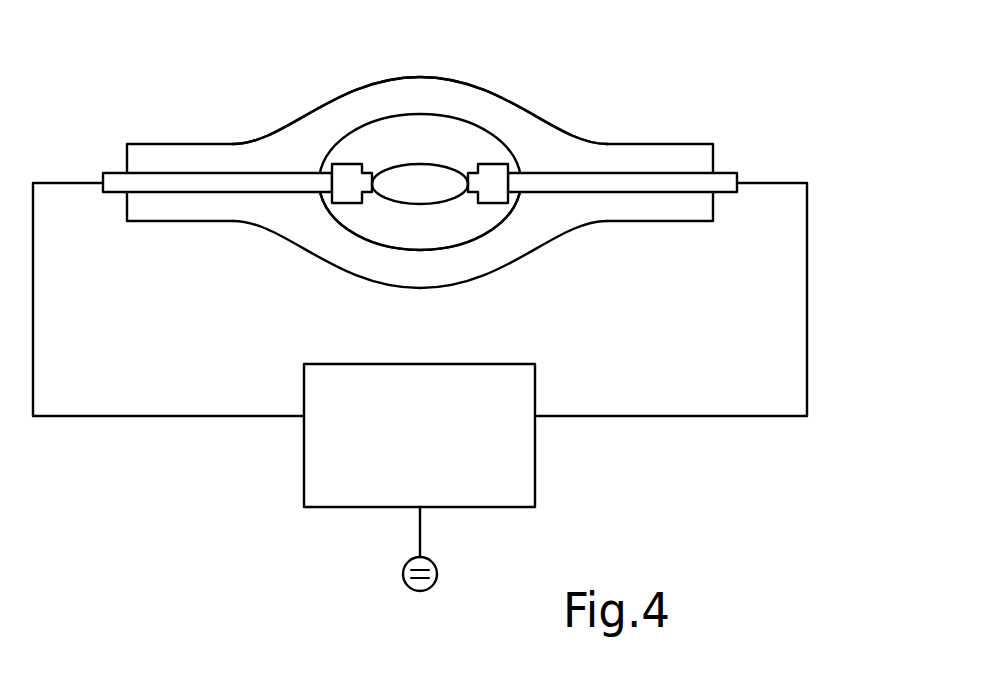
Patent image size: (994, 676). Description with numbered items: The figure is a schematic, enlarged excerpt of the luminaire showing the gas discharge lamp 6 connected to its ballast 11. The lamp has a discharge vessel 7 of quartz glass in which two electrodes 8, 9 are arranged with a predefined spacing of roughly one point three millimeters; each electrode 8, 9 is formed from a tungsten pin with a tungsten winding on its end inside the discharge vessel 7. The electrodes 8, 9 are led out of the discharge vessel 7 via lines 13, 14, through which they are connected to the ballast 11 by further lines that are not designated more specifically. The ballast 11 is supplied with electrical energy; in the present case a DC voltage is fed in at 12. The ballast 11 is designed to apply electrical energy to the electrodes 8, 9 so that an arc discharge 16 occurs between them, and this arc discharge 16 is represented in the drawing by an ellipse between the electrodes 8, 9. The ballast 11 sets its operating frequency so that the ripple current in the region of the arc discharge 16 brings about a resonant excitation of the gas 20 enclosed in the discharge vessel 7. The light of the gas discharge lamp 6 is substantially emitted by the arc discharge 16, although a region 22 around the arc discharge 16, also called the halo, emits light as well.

The gas discharge lamp 6 is at (336, 77).
The discharge vessel 7 is at (403, 92).
The electrode 8 is at (343, 165).
The electrode 9 is at (495, 165).
The ballast 11 is at (352, 508).
The DC voltage feed 12 is at (437, 574).
The line 13 is at (723, 180).
The line 14 is at (112, 180).
The arc discharge 16 is at (410, 193).
The gas 20 is at (469, 107).
The region around the arc discharge 22 is at (460, 227).